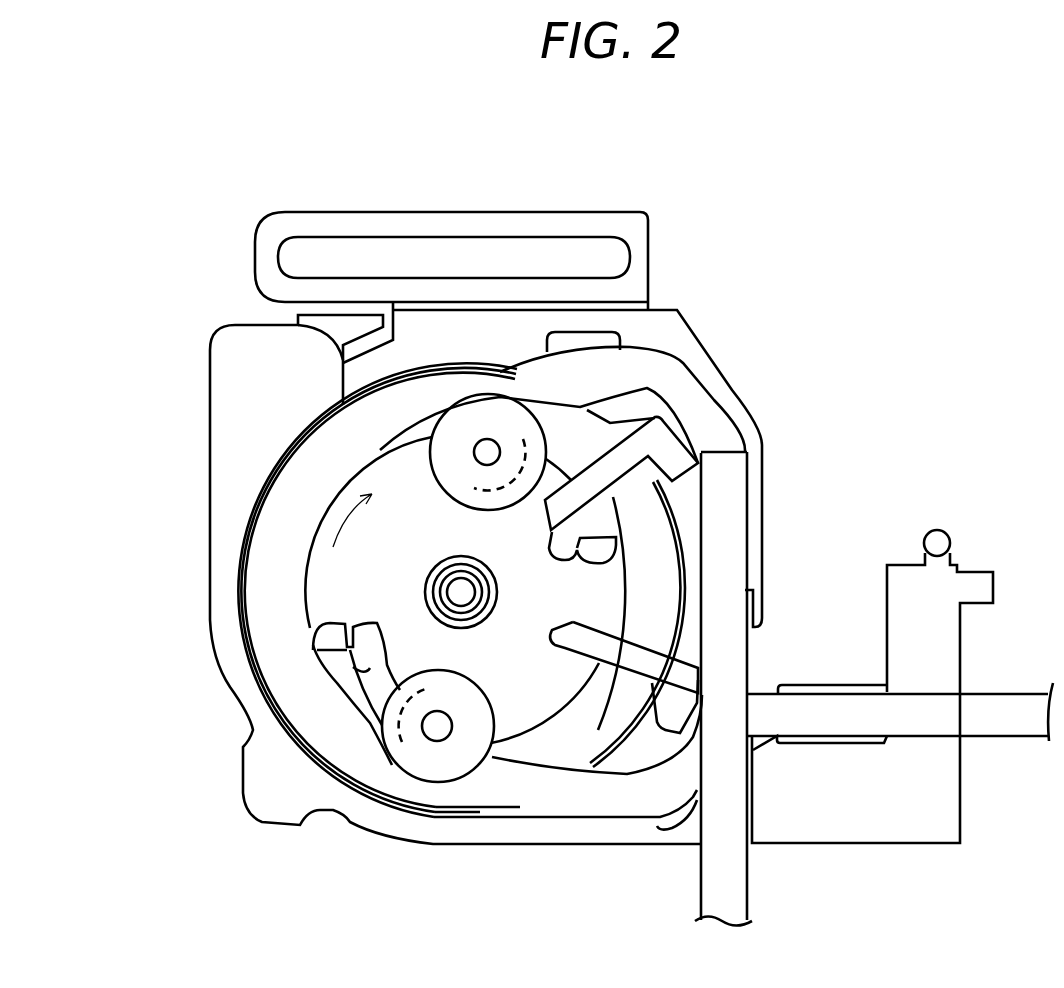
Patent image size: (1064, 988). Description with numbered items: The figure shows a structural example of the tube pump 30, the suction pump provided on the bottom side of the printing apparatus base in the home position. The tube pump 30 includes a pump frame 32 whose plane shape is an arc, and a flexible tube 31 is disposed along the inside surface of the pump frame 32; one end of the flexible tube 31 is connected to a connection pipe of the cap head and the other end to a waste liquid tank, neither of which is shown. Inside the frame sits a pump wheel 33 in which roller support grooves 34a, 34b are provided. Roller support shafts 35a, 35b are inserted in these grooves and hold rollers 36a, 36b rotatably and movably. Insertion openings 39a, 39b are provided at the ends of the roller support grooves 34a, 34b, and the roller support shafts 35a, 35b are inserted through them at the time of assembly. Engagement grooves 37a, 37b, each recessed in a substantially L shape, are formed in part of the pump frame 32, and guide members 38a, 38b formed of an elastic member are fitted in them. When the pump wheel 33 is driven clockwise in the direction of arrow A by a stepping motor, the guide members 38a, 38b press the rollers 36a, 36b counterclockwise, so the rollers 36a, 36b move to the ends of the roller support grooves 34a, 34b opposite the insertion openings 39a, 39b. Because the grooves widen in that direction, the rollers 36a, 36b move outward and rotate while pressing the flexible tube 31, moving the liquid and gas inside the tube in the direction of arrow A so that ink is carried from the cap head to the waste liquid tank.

The tube pump 30 is at (760, 357).
The flexible tube 31 is at (1013, 737).
The pump frame 32 is at (353, 827).
The pump wheel 33 is at (340, 495).
The roller support groove 34a is at (370, 668).
The roller support groove 34b is at (556, 496).
The roller support shaft 35a is at (444, 728).
The roller support shaft 35b is at (487, 452).
The roller 36a is at (433, 777).
The roller 36b is at (457, 413).
The engagement groove 37a is at (703, 453).
The engagement groove 37b is at (650, 713).
The guide member 38a is at (613, 483).
The guide member 38b is at (615, 672).
The insertion opening 39a is at (313, 628).
The insertion opening 39b is at (616, 545).